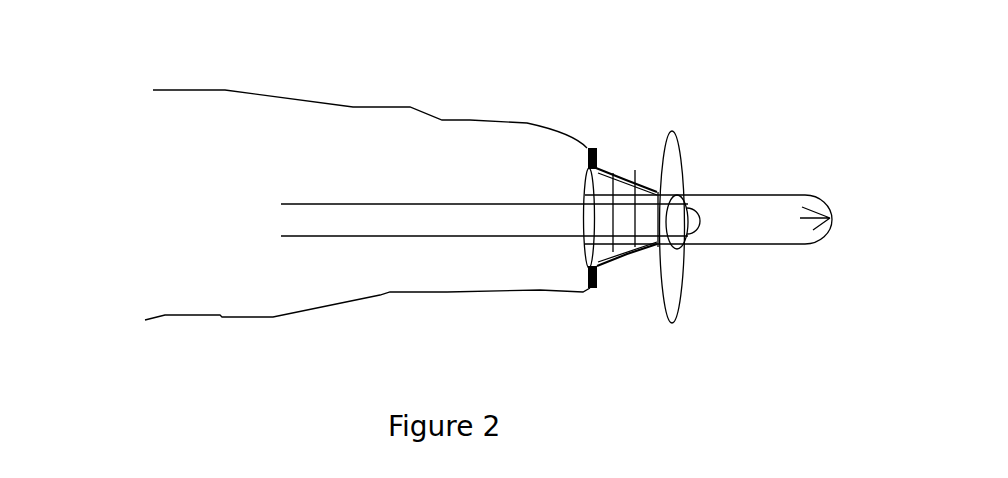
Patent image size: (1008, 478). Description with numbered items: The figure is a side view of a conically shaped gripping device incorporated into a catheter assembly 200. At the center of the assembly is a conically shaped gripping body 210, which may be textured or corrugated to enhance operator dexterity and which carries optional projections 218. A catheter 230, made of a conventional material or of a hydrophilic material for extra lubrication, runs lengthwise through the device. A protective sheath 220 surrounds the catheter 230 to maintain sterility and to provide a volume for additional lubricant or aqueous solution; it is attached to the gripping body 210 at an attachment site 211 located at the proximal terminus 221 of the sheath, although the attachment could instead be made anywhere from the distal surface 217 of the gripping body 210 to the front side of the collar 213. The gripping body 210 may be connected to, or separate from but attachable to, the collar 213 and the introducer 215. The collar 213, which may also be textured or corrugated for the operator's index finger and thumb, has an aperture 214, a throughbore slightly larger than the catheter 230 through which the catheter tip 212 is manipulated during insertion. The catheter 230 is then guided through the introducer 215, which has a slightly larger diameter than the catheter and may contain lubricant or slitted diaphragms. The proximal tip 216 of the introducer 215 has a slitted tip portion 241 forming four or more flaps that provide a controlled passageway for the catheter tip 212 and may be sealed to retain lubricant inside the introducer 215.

The catheter assembly 200 is at (110, 217).
The gripping body 210 is at (642, 187).
The attachment site 211 is at (612, 175).
The catheter tip 212 is at (693, 207).
The collar 213 is at (681, 300).
The aperture 214 is at (686, 246).
The introducer 215 is at (758, 195).
The proximal tip 216 is at (832, 218).
The distal surface 217 is at (580, 202).
The projections 218 is at (590, 289).
The protective sheath 220 is at (397, 107).
The proximal terminus 221 is at (597, 285).
The catheter 230 is at (310, 203).
The slitted tip portion 241 is at (817, 240).